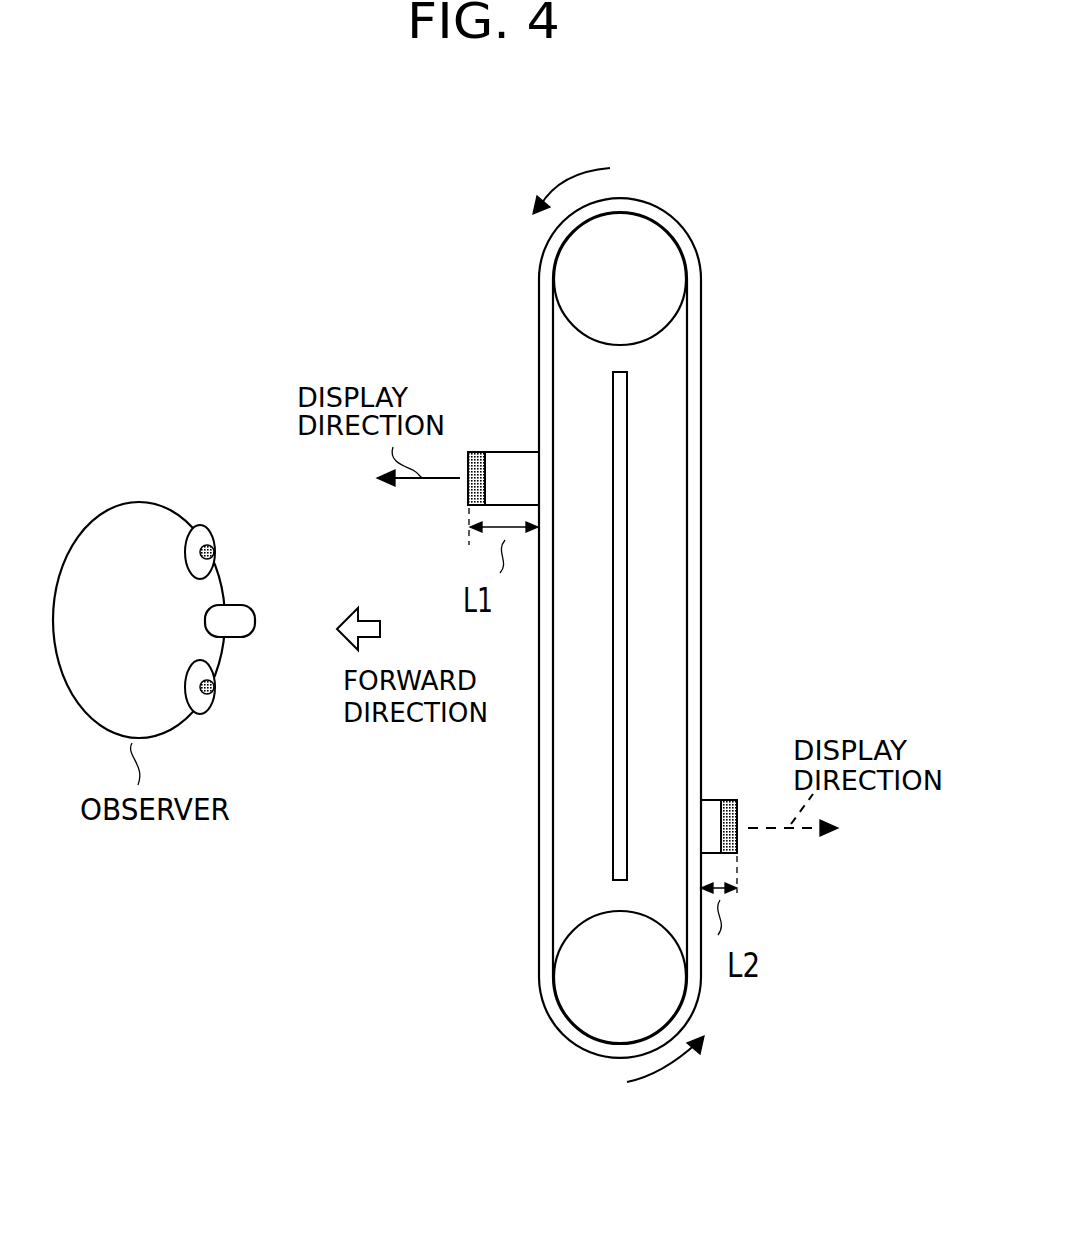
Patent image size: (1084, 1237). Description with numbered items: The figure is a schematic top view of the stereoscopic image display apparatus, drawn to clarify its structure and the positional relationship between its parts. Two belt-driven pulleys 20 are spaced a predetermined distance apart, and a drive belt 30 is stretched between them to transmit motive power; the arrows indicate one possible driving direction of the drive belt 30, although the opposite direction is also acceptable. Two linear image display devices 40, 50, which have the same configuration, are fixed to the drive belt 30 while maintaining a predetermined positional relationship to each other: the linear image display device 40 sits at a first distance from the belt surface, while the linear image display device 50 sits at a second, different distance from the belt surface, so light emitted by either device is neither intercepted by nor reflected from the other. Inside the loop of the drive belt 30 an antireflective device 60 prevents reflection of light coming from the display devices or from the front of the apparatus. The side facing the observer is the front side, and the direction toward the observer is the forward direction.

The belt-driven pulley 20 is at (672, 233).
The drive belt 30 is at (700, 516).
The linear image display device 40 is at (478, 451).
The linear image display device 50 is at (722, 798).
The antireflective device 60 is at (627, 450).